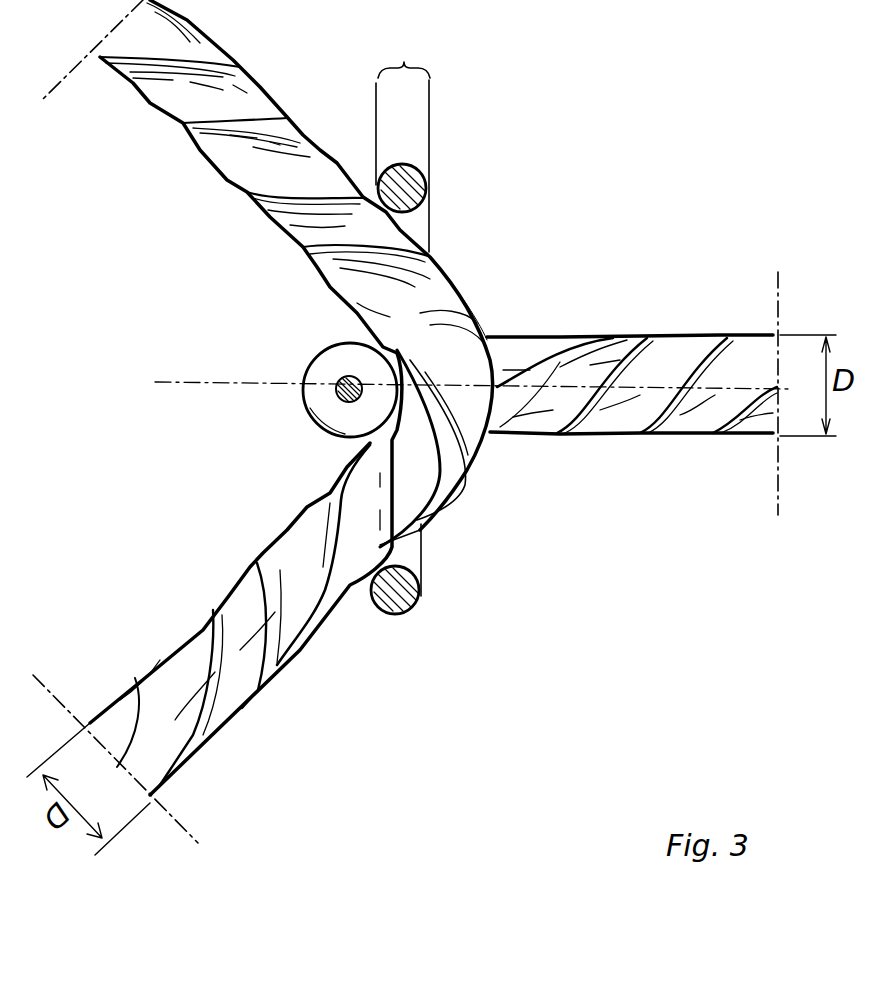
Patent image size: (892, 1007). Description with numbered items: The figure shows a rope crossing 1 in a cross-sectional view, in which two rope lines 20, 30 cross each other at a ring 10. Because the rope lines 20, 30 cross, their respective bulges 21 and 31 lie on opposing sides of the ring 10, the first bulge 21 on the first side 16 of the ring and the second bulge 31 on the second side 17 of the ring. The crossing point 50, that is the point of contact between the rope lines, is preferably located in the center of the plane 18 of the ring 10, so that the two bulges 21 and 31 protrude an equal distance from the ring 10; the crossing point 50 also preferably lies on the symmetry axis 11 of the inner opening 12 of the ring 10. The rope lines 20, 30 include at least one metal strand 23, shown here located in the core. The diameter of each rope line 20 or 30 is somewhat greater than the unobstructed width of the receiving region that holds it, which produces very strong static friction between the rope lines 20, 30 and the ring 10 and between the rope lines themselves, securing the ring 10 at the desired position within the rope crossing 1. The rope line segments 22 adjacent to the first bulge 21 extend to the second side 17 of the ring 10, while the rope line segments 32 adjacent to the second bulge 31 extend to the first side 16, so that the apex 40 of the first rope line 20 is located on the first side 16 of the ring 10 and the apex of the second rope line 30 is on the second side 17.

The rope connection assembly 1 is at (509, 206).
The ring 10 is at (405, 600).
The symmetry axis 11 is at (464, 405).
The inner opening 12 is at (450, 255).
The first side of the ring 16 is at (427, 182).
The second side of the ring 17 is at (377, 180).
The plane of the ring 18 is at (404, 51).
The first rope line 20 is at (296, 311).
The first bulge 21 is at (487, 333).
The rope line segments 22 is at (217, 157).
The metal strand 23 is at (335, 397).
The second rope line 30 is at (672, 335).
The second bulge 31 is at (304, 384).
The rope line segments 32 is at (674, 423).
The apex of the first rope line 40 is at (497, 392).
The crossing point 50 is at (442, 460).